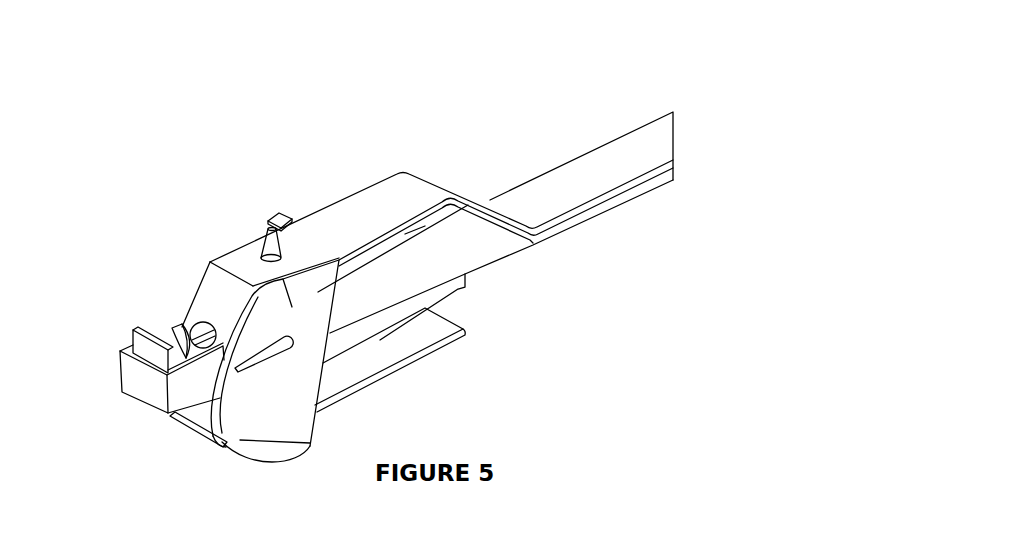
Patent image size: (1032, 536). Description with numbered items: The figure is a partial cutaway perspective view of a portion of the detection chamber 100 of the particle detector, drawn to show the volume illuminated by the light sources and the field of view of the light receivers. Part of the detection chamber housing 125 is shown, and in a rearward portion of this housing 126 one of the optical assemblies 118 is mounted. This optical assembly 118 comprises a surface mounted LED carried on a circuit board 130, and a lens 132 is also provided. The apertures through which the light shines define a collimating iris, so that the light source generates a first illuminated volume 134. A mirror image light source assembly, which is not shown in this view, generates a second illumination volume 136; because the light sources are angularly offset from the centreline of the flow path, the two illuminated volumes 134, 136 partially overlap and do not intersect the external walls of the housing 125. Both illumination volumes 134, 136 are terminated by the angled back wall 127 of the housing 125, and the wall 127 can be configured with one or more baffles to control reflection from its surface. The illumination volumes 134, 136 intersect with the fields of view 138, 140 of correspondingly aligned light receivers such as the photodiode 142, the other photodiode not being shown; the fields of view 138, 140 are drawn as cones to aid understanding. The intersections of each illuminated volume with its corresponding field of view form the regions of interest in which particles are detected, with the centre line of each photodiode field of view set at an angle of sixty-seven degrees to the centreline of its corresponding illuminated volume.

The detection chamber 100 is at (511, 88).
The optical assembly 118 is at (120, 406).
The detection chamber housing 125 is at (341, 197).
The rearward portion of the housing 126 is at (170, 302).
The angled back wall 127 is at (468, 204).
The circuit board 130 is at (130, 334).
The lens 132 is at (168, 330).
The first illuminated volume 134 is at (450, 204).
The second illumination volume 136 is at (500, 263).
The field of view 138 is at (271, 248).
The field of view 140 is at (313, 423).
The photodiode 142 is at (282, 217).